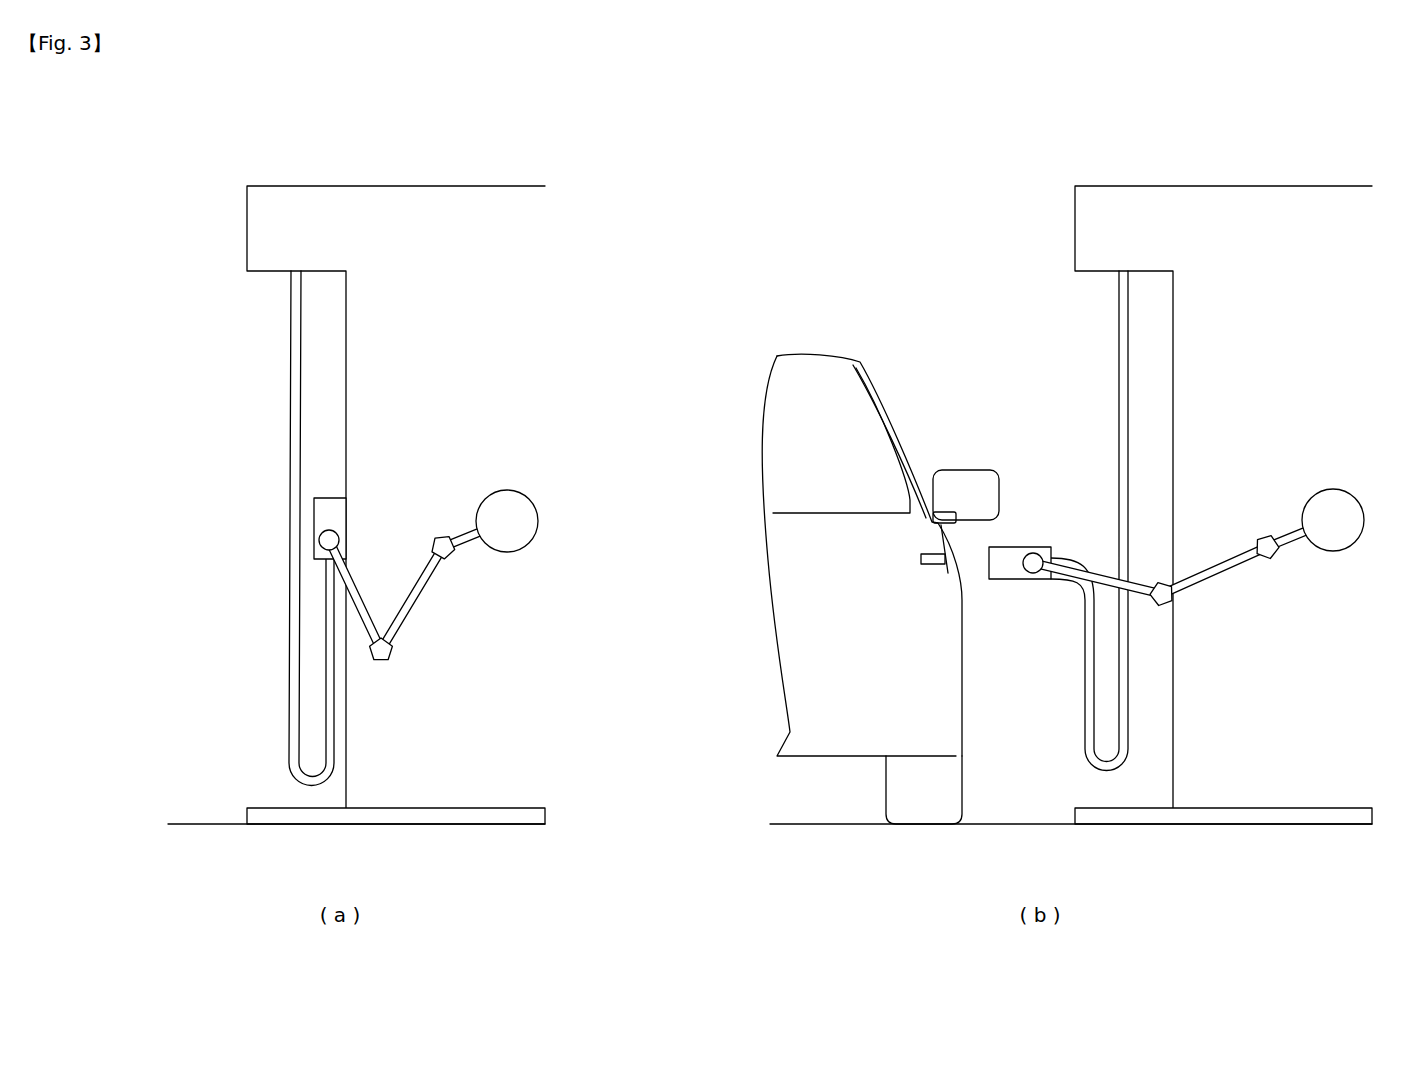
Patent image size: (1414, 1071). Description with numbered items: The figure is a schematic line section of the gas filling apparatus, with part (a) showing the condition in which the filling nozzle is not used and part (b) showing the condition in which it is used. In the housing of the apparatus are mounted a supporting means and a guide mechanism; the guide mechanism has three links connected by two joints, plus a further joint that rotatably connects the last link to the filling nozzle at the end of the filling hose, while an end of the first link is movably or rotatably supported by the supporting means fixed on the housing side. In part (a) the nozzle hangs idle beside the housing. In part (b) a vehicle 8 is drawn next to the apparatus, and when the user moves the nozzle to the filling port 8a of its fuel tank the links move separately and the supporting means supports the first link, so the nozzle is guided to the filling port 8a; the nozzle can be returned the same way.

The vehicle 8 is at (962, 710).
The filling port 8a is at (933, 566).